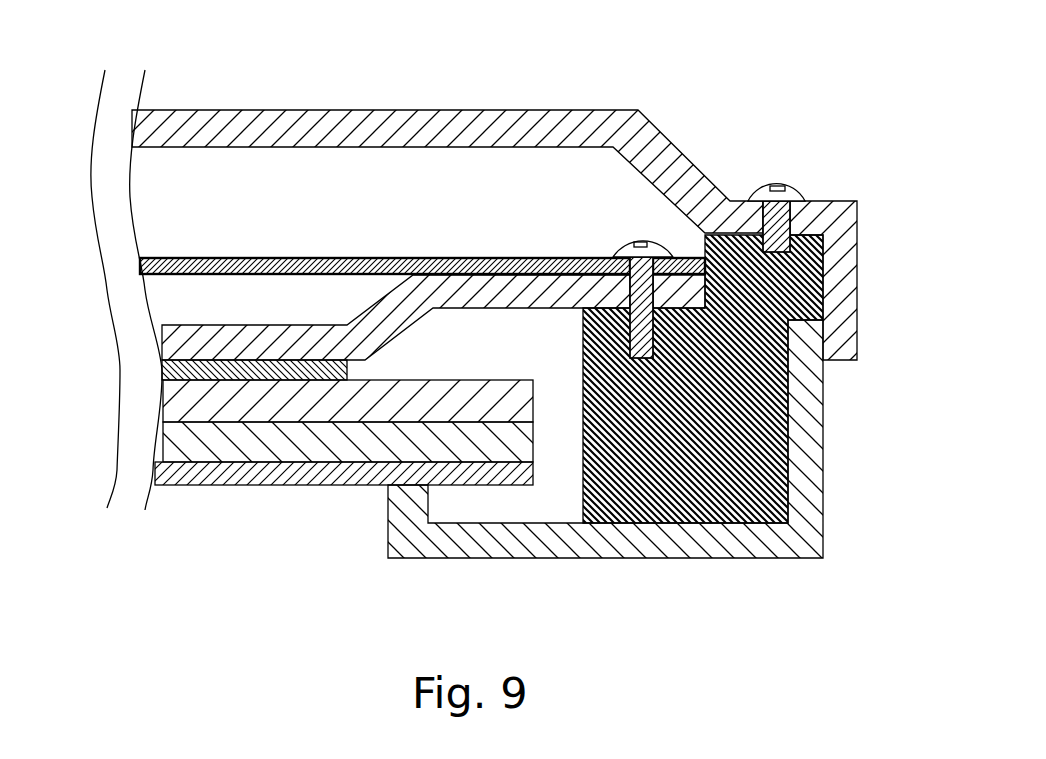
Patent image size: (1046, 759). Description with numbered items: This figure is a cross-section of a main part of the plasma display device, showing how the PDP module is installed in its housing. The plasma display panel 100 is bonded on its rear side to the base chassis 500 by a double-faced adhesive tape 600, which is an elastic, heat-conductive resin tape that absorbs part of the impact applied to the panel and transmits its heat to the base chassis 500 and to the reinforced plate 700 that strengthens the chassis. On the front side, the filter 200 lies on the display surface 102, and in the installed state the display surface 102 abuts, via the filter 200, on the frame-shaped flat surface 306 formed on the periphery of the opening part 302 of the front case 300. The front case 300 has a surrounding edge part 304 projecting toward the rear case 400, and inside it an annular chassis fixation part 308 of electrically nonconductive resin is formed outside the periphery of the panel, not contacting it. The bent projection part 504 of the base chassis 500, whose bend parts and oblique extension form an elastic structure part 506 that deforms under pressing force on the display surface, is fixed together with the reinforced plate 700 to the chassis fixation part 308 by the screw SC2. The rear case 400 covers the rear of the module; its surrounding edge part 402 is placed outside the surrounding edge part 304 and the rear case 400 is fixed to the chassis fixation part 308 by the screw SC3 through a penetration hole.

The plasma display panel 100 is at (248, 413).
The display surface 102 is at (192, 463).
The filter 200 is at (470, 487).
The front case 300 is at (619, 440).
The opening part 302 is at (344, 506).
The surrounding edge part 304 is at (822, 430).
The flat surface 306 is at (383, 487).
The chassis fixation part 308 is at (802, 488).
The rear case 400 is at (535, 199).
The surrounding edge part 402 is at (857, 265).
The base chassis 500 is at (215, 340).
The projection part 504 is at (557, 180).
The elastic structure part 506 is at (679, 291).
The double-faced adhesive tape 600 is at (157, 372).
The reinforced plate 700 is at (287, 258).
The screw SC2 is at (647, 242).
The screw SC3 is at (803, 190).